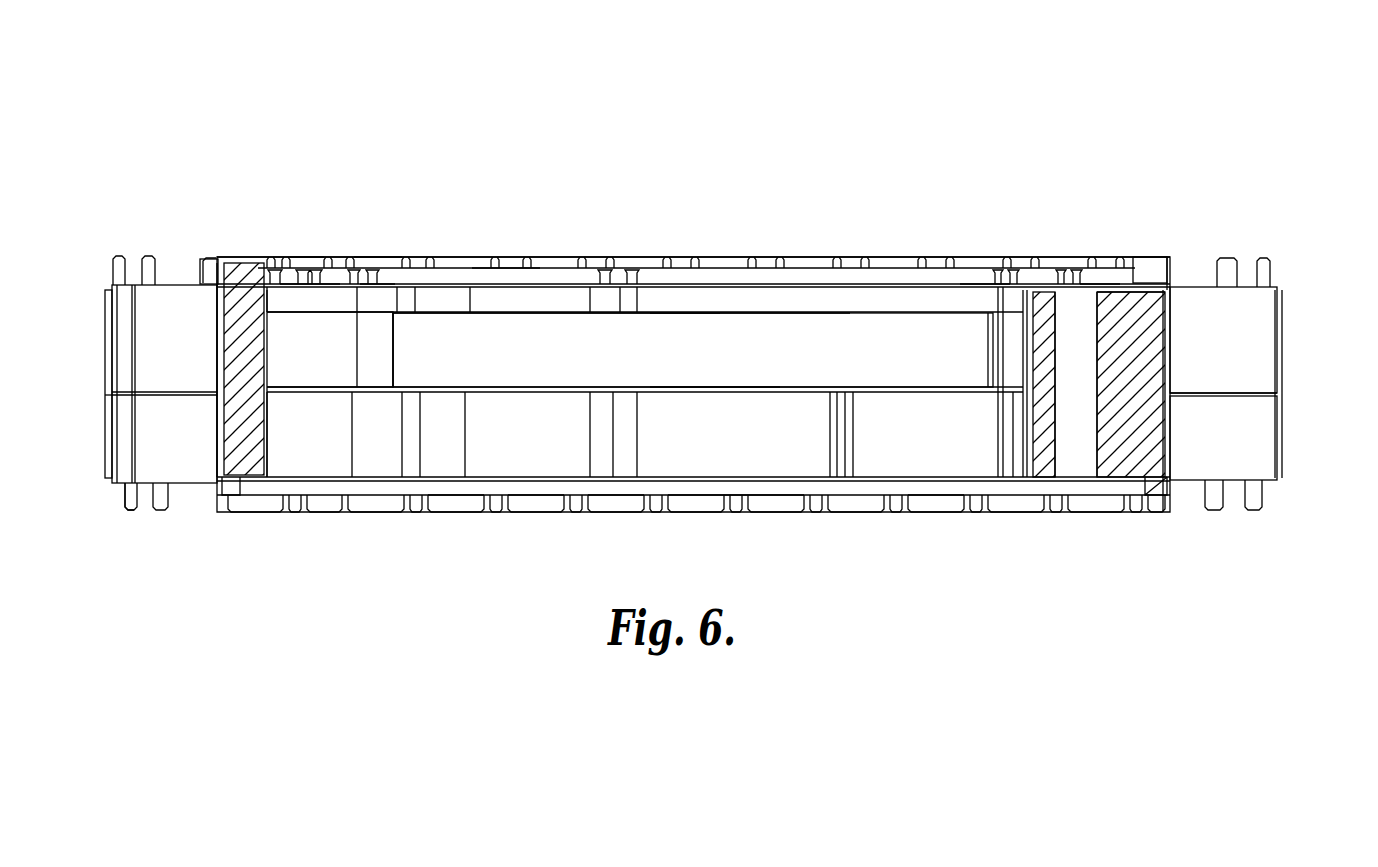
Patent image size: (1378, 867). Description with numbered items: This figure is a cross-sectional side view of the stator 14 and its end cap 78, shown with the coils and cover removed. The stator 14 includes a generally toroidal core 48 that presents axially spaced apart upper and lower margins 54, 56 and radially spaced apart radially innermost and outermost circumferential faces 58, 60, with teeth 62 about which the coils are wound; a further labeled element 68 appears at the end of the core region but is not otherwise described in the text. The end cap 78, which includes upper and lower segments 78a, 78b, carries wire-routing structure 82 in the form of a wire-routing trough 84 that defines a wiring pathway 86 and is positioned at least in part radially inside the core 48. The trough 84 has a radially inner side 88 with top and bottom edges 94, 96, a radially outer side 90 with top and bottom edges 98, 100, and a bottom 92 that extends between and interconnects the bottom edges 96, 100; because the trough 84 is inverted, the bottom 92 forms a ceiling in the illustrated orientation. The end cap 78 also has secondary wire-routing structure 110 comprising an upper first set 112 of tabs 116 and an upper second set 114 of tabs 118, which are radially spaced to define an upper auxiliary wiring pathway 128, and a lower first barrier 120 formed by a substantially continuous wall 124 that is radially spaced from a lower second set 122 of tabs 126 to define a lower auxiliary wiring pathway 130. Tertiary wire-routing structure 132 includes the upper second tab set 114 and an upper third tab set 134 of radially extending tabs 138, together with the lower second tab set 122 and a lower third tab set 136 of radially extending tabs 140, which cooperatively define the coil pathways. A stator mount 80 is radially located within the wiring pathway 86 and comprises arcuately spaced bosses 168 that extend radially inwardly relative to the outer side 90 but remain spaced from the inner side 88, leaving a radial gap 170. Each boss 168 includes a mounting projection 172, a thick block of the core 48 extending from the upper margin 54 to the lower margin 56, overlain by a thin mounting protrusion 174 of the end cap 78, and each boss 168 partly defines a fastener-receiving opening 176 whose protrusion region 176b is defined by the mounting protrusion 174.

The stator 14 is at (920, 93).
The core 48 is at (1125, 335).
The upper margin 54 is at (238, 282).
The lower margin 56 is at (233, 483).
The radially innermost circumferential face 58 is at (264, 452).
The radially outermost circumferential face 60 is at (103, 425).
The teeth 62 is at (100, 383).
The end plate 68 is at (107, 335).
The end cap 78 is at (433, 250).
The upper segment 78a is at (1180, 362).
The lower segment 78b is at (1180, 430).
The stator mount 80 is at (1120, 430).
The wire-routing structure 82 is at (557, 345).
The wire-routing trough 84 is at (517, 340).
The wiring pathway 86 is at (323, 345).
The radially inner side 88 is at (640, 330).
The radially outer side 90 is at (742, 310).
The bottom 92 is at (377, 395).
The top edge 94 is at (690, 310).
The bottom edge 96 is at (718, 392).
The top edge 98 is at (810, 310).
The bottom edge 100 is at (265, 383).
The secondary wire-routing structure 110 is at (343, 250).
The upper first set of tabs 112 is at (401, 252).
The upper second set of tabs 114 is at (508, 268).
The tabs 116 is at (335, 281).
The tabs 118 is at (373, 268).
The lower first barrier 120 is at (530, 487).
The lower second set of tabs 122 is at (450, 505).
The wall 124 is at (573, 485).
The tabs 126 is at (745, 500).
The upper auxiliary wiring pathway 128 is at (1167, 282).
The lower auxiliary wiring pathway 130 is at (1165, 490).
The tertiary wire-routing structure 132 is at (148, 252).
The upper third tab set 134 is at (113, 252).
The lower third tab set 136 is at (128, 520).
The tabs 138 is at (213, 262).
The tabs 140 is at (125, 497).
The bosses 168 is at (1137, 480).
The radial gap 170 is at (1013, 323).
The mounting projections 172 is at (1045, 445).
The mounting protrusions 174 is at (1027, 345).
The fastener-receiving opening 176 is at (1078, 438).
The protrusion region 176b is at (1142, 272).